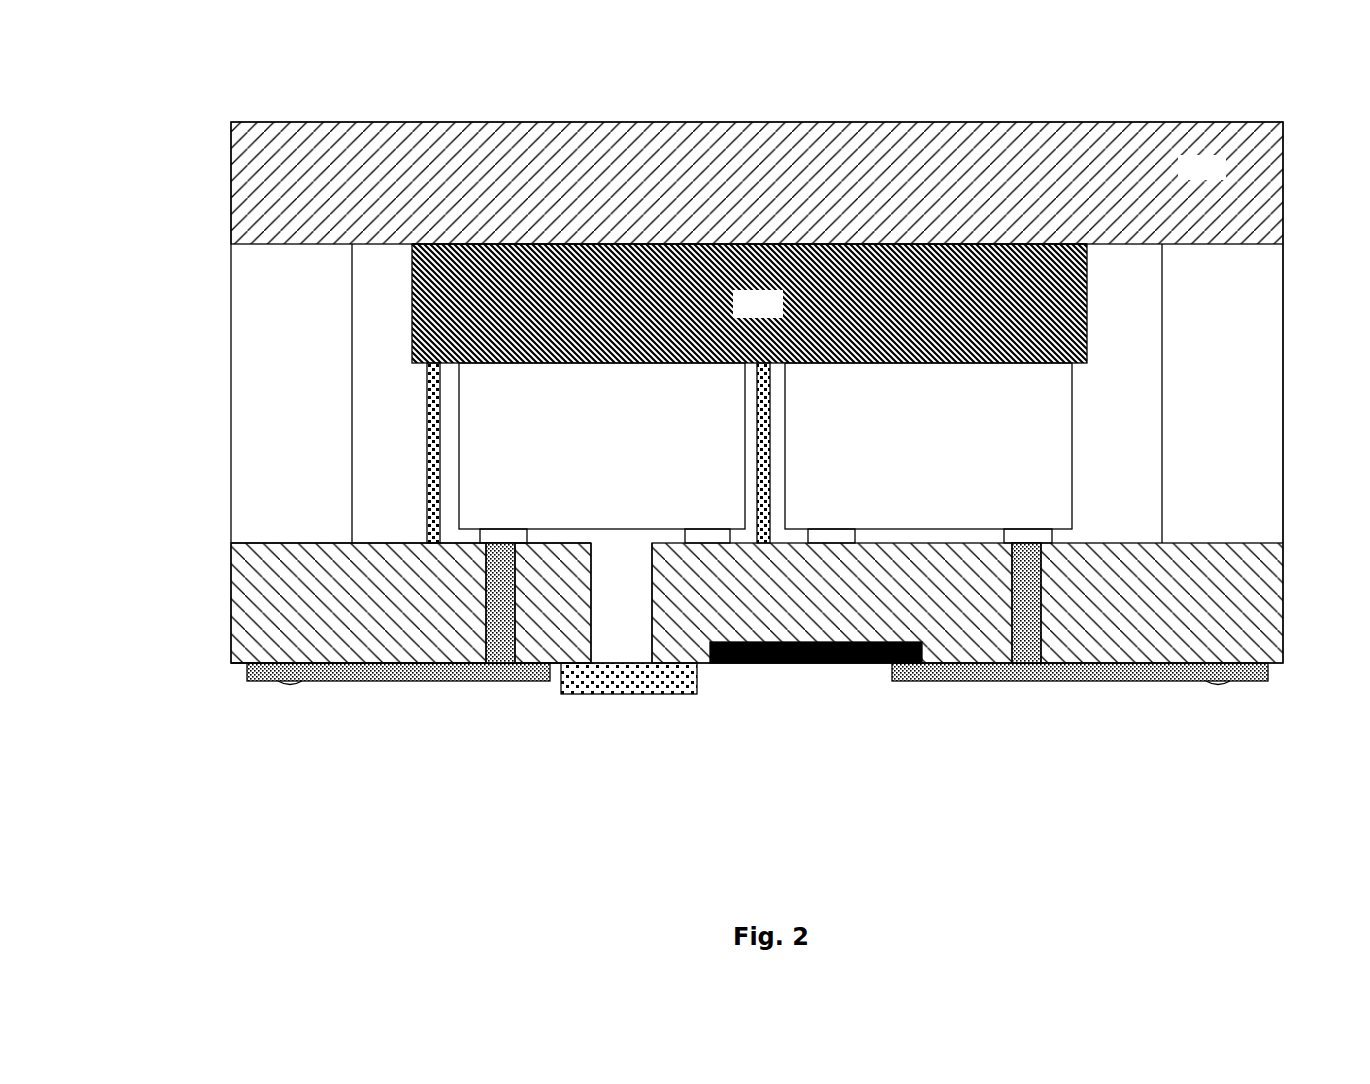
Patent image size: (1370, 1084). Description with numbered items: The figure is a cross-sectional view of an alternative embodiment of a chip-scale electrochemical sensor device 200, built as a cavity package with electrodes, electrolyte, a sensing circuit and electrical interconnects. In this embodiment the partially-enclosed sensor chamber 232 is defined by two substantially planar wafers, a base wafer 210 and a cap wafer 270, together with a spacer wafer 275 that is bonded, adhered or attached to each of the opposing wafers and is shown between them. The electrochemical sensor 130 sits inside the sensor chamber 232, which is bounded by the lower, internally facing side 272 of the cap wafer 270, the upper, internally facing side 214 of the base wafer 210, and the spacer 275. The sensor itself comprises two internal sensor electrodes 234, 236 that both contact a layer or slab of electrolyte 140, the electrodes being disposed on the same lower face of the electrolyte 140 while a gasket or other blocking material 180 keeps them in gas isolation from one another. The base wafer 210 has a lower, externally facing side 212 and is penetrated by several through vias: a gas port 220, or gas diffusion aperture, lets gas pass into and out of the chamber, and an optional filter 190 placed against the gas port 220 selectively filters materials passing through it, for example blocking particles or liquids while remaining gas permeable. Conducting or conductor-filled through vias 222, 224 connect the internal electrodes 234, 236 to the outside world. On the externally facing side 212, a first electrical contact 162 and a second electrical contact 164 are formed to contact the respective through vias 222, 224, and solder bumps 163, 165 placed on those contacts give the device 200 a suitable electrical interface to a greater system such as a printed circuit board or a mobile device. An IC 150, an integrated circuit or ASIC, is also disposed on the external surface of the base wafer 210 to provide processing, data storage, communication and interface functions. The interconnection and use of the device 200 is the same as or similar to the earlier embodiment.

The electrochemical sensor device 200 is at (200, 92).
The cap wafer 270 is at (1218, 177).
The lower/internally facing side of cap wafer 272 is at (1092, 246).
The electrolyte 140 is at (775, 315).
The electrochemical sensor 130 is at (385, 450).
The gasket or blocking material 180 is at (423, 393).
The internal sensor electrode 234 is at (625, 446).
The internal sensor electrode 236 is at (948, 446).
The sensor chamber 232 is at (1130, 433).
The spacer wafer 275 is at (1237, 431).
The base wafer 210 is at (230, 570).
The upper/internally facing side of base wafer 214 is at (392, 540).
The lower/externally facing side of base wafer 212 is at (343, 660).
The conducting through via 222 is at (500, 630).
The conducting through via 224 is at (1025, 628).
The gas port 220 is at (618, 624).
The filter 190 is at (565, 696).
The IC 150 is at (830, 668).
The first electrical contact 162 is at (403, 683).
The solder bump 163 is at (290, 686).
The second electrical contact 164 is at (1143, 683).
The solder bump 165 is at (1217, 686).